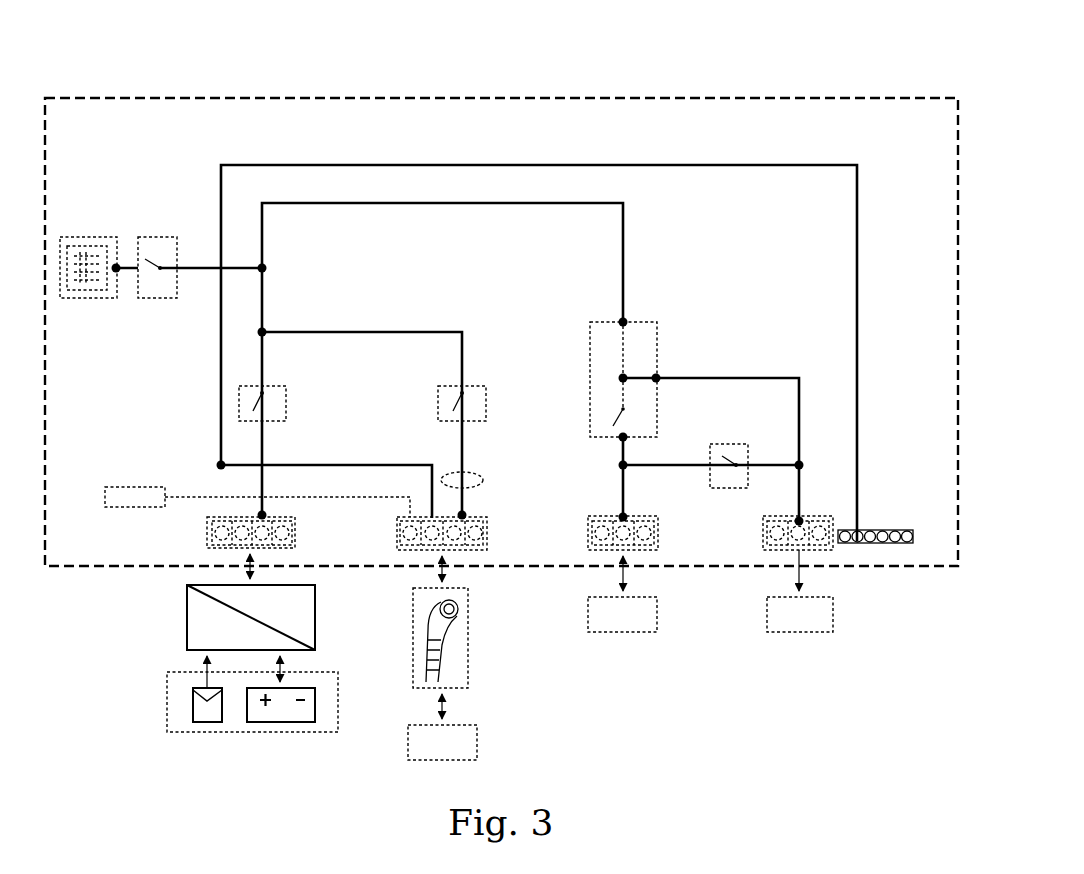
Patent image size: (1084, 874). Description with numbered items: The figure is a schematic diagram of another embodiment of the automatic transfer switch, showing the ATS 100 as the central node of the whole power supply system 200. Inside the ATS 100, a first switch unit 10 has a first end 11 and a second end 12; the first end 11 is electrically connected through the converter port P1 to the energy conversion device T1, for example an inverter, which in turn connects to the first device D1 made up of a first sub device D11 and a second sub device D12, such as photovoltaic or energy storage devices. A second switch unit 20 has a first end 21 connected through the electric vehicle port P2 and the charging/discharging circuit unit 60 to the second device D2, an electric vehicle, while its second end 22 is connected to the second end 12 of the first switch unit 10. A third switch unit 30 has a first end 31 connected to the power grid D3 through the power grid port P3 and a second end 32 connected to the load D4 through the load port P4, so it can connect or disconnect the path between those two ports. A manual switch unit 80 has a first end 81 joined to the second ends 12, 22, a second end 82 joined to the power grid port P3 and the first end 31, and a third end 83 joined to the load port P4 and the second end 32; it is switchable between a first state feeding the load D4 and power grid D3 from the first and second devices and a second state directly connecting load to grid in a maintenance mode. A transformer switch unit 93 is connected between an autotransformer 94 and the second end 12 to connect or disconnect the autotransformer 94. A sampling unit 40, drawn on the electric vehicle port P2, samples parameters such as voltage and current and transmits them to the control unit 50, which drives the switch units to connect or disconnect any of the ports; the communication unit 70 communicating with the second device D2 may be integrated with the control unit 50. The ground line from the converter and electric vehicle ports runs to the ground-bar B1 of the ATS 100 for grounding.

The power supply system 200 is at (501, 399).
The ATS 100 is at (501, 332).
The autotransformer 94 is at (86, 236).
The transformer switch unit 93 is at (158, 236).
The first switch unit 10 is at (284, 407).
The first end 11 is at (287, 403).
The second end 12 is at (269, 392).
The second switch unit 20 is at (484, 407).
The first end 21 is at (473, 418).
The second end 22 is at (466, 392).
The manual switch unit 80 is at (655, 372).
The first end 81 is at (606, 338).
The second end 82 is at (606, 436).
The third end 83 is at (654, 379).
The third switch unit 30 is at (727, 449).
The first end 31 is at (729, 443).
The second end 32 is at (742, 462).
The control unit 50 is at (257, 476).
The communication unit 70 is at (113, 486).
The sampling unit 40 is at (486, 479).
The converter port P1 is at (300, 530).
The electric vehicle port P2 is at (490, 540).
The power grid port P3 is at (662, 532).
The load port P4 is at (760, 540).
The ground-bar B1 is at (880, 529).
The energy conversion device T1 is at (186, 623).
The first device D1 is at (254, 698).
The first sub device D11 is at (200, 707).
The second sub device D12 is at (306, 710).
The charging/discharging circuit unit 60 is at (470, 626).
The second device D2 is at (478, 744).
The power grid D3 is at (659, 612).
The load D4 is at (835, 612).